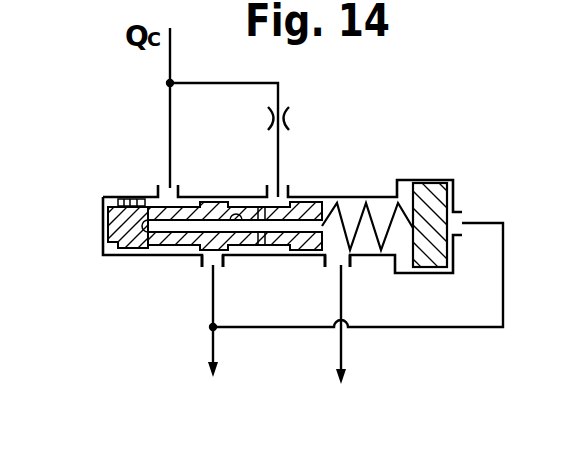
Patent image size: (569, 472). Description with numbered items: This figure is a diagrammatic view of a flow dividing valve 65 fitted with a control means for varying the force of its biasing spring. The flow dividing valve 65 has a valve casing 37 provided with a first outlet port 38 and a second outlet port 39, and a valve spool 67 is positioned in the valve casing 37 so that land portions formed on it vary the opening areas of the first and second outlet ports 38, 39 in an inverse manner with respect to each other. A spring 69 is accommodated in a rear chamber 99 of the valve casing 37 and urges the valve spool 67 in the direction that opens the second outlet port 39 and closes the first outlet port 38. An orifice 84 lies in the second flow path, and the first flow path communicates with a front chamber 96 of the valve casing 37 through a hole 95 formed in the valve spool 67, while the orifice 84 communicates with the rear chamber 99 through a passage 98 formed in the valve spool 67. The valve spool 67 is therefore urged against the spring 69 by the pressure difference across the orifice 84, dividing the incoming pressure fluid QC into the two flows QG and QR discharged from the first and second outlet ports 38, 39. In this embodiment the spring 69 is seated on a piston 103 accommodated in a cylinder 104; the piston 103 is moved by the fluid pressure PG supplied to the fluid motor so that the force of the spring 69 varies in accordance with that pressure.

The valve casing 37 is at (158, 258).
The first outlet port 38 is at (205, 264).
The second outlet port 39 is at (333, 264).
The flow dividing valve 65 is at (94, 229).
The valve spool 67 is at (120, 256).
The spring 69 is at (347, 203).
The orifice 84 is at (290, 117).
The hole 95 is at (133, 198).
The front chamber 96 is at (107, 197).
The passage 98 is at (230, 215).
The rear chamber 99 is at (258, 207).
The piston 103 is at (437, 188).
The cylinder 104 is at (455, 197).